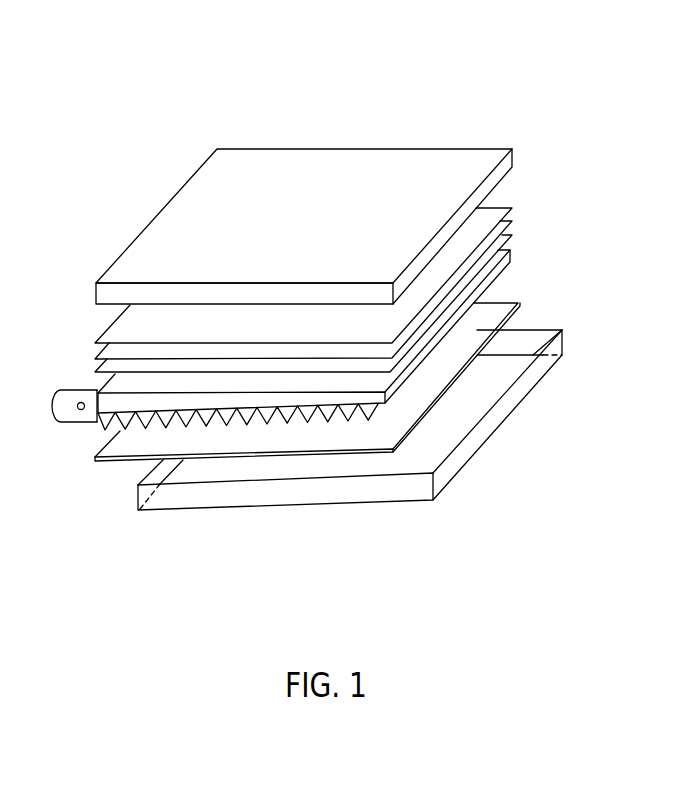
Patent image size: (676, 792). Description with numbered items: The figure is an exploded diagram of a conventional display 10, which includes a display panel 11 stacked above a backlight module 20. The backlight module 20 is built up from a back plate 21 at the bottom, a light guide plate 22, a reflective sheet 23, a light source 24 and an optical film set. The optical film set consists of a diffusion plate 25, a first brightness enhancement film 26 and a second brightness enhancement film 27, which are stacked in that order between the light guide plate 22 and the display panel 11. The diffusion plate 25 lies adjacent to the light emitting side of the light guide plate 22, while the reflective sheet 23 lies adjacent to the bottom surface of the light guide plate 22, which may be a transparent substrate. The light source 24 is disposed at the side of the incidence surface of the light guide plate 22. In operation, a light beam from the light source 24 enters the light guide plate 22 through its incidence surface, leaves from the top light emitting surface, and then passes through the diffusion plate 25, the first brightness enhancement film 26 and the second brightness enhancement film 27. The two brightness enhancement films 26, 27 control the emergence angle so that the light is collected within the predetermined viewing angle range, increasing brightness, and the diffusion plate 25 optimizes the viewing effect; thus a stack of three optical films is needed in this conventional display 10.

The display 10 is at (563, 28).
The display panel 11 is at (156, 258).
The backlight module 20 is at (568, 299).
The back plate 21 is at (562, 340).
The light guide plate 22 is at (88, 420).
The reflective sheet 23 is at (113, 462).
The light source 24 is at (81, 402).
The diffusion plate 25 is at (513, 235).
The first brightness enhancement film 26 is at (513, 221).
The second brightness enhancement film 27 is at (513, 208).